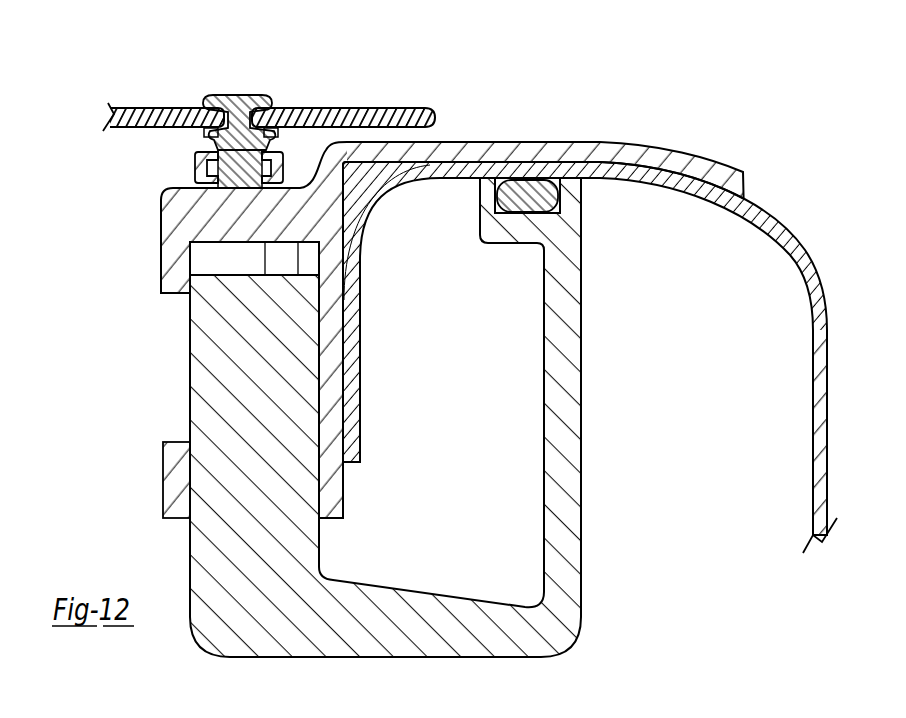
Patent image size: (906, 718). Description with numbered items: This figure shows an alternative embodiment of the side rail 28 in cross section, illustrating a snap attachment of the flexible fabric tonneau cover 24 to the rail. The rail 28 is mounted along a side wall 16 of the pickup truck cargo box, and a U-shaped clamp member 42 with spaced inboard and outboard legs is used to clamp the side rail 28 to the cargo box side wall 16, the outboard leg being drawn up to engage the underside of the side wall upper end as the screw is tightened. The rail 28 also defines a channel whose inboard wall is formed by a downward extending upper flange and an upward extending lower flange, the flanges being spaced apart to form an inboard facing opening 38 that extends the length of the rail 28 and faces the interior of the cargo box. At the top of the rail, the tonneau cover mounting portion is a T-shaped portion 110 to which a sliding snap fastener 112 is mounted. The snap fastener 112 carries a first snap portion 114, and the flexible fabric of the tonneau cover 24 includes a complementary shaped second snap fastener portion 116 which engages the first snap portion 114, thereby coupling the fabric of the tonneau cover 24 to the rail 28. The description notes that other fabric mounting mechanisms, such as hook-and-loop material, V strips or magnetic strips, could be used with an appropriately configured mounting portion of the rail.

The side wall 16 is at (818, 272).
The tonneau cover 24 is at (397, 106).
The side rail 28 is at (146, 254).
The inboard facing opening 38 is at (150, 386).
The clamp member 42 is at (596, 381).
The T-shaped portion 110 is at (203, 152).
The sliding snap fastener 112 is at (273, 150).
The first snap portion 114 is at (238, 136).
The second snap fastener portion 116 is at (218, 138).